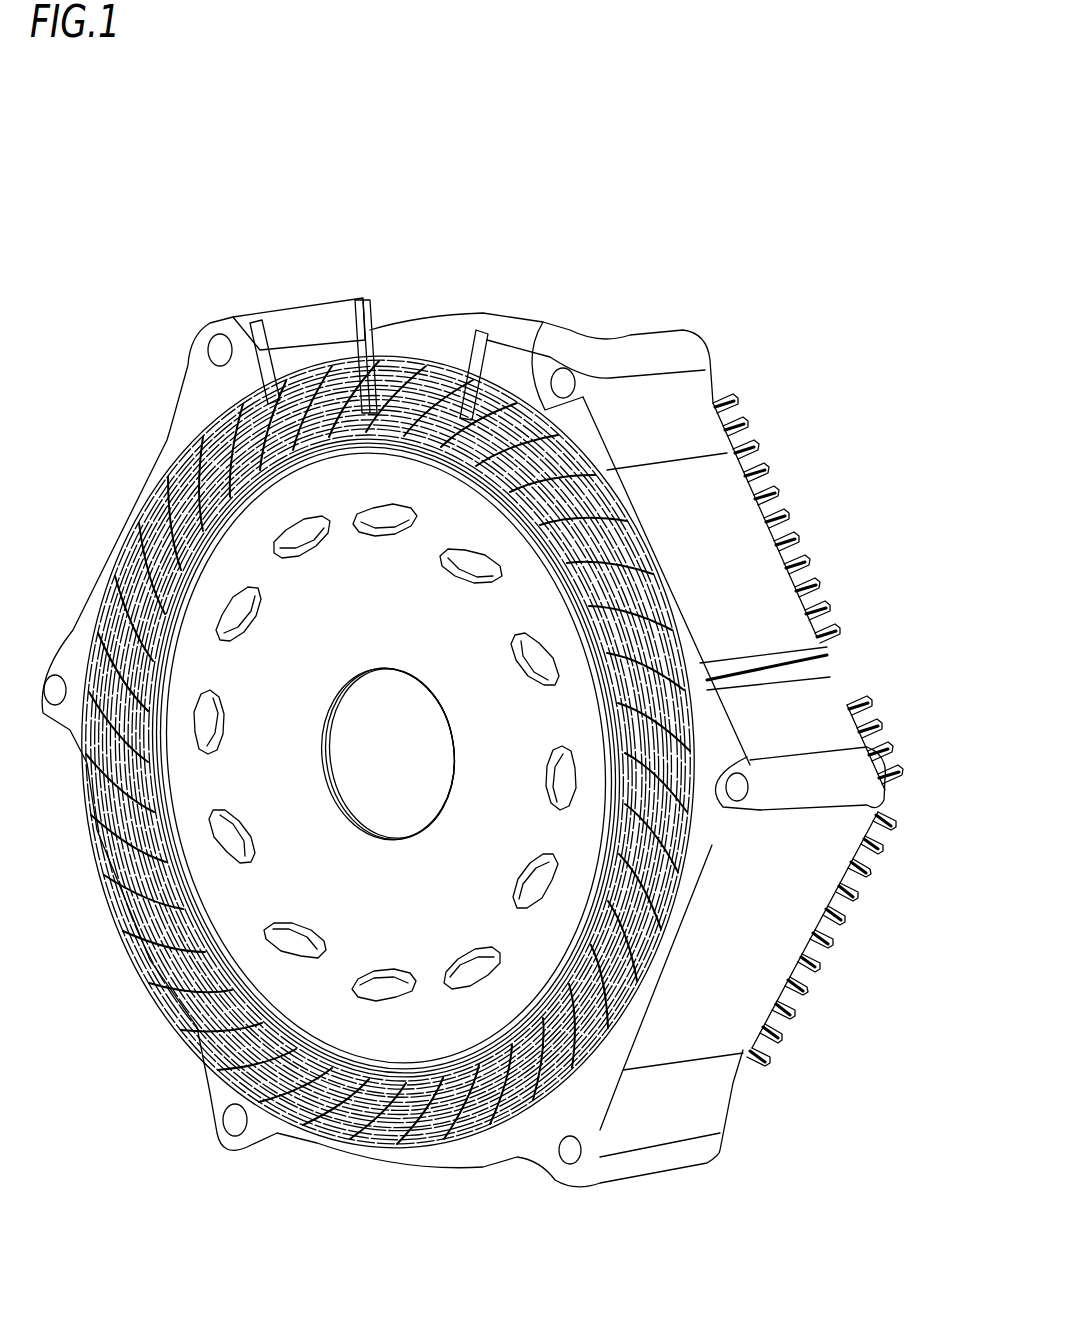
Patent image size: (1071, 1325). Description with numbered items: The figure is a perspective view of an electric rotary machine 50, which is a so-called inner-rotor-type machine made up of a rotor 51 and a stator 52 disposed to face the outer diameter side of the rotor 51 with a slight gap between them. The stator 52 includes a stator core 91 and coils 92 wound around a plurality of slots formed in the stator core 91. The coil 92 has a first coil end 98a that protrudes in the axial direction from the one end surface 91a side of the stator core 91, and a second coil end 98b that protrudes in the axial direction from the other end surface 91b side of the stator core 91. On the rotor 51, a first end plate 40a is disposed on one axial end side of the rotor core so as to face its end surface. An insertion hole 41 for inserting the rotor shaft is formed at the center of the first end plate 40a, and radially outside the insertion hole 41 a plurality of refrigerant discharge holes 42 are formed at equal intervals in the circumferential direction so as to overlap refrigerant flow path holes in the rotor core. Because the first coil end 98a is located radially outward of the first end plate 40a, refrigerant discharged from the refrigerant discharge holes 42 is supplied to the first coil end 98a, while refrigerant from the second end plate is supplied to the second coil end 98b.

The electric rotary machine 50 is at (608, 145).
The stator 52 is at (567, 332).
The stator core 91 is at (737, 513).
The first coil end 98a is at (683, 600).
The second coil end 98b is at (840, 567).
The coil 92 is at (110, 500).
The rotor 51 is at (270, 900).
The first end plate 40a is at (433, 1023).
The insertion hole 41 is at (350, 690).
The refrigerant discharge hole 42 is at (560, 773).
The other end surface 91b is at (883, 780).
The one end surface 91a is at (703, 823).